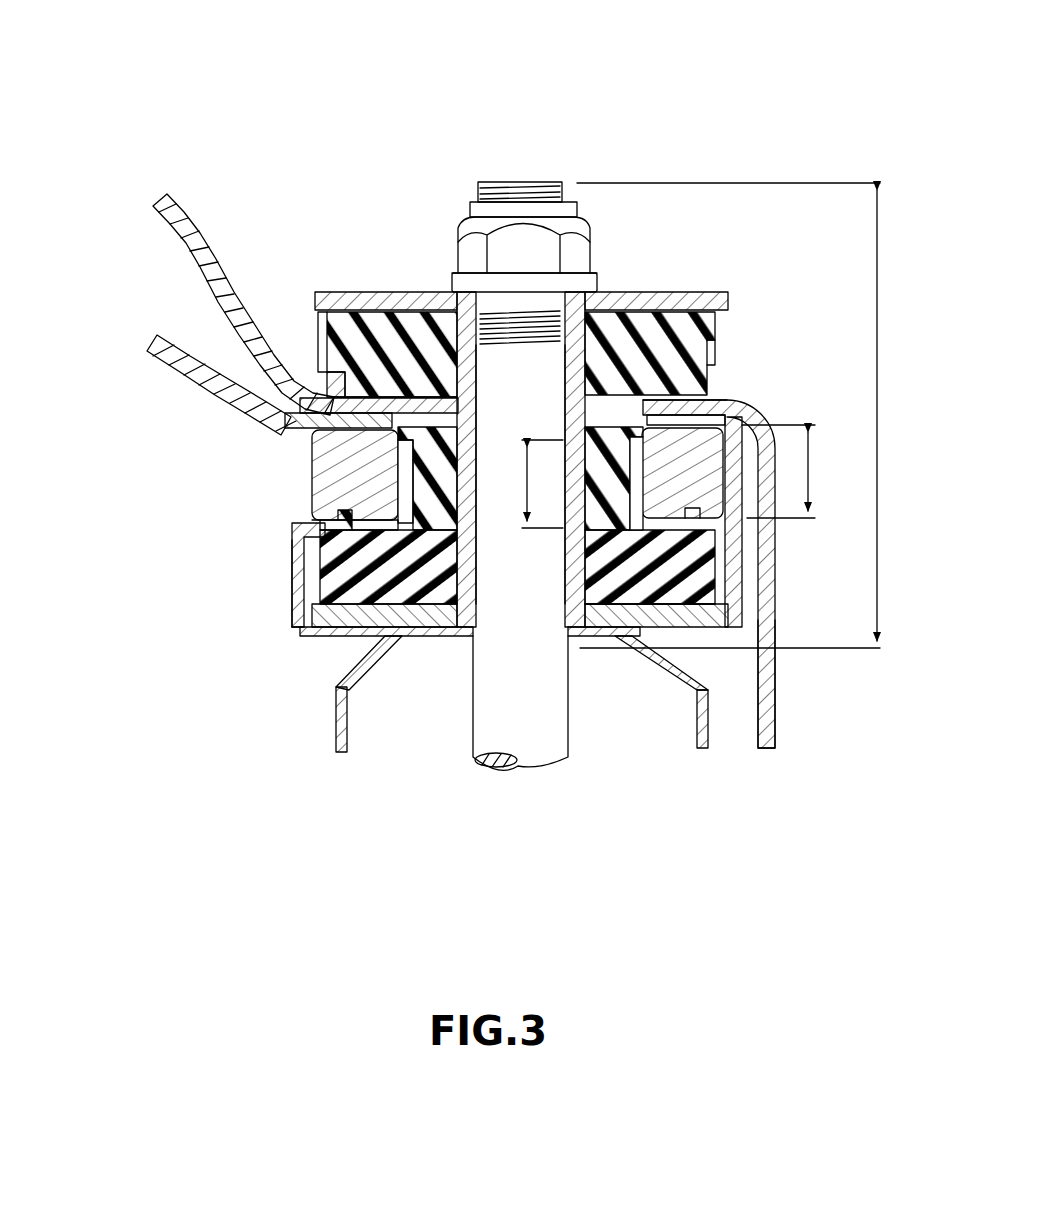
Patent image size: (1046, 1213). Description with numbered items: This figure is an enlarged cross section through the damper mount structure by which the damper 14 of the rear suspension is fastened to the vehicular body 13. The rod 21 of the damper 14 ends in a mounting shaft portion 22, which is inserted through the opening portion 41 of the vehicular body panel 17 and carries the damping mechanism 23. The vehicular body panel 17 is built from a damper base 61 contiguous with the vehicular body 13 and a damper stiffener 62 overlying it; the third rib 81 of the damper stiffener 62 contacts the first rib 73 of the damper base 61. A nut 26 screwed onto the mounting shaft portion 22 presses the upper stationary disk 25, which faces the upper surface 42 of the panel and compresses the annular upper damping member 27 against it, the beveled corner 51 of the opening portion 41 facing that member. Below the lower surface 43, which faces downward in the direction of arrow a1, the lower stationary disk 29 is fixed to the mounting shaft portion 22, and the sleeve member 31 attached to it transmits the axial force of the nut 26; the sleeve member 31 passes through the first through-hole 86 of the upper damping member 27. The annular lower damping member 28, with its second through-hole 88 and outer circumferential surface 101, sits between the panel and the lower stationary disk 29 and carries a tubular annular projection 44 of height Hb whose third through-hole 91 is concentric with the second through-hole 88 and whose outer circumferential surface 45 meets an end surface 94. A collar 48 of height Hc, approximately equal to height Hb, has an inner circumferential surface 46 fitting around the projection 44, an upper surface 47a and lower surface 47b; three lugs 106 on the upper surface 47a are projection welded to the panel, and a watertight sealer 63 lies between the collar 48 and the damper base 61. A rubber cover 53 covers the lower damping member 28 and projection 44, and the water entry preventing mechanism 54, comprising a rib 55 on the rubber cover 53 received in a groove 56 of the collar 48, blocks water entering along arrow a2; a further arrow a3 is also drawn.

The vehicular body 13 is at (191, 100).
The damper 14 is at (295, 736).
The vehicular body panel 17 is at (128, 248).
The rod 21 is at (470, 750).
The mounting shaft portion 22 is at (878, 283).
The damping mechanism 23 is at (400, 213).
The upper stationary disk 25 is at (355, 292).
The nut 26 is at (458, 250).
The upper damping member 27 is at (327, 337).
The lower damping member 28 is at (340, 558).
The lower stationary disk 29 is at (340, 630).
The sleeve member 31 is at (400, 640).
The opening portion 41 is at (432, 395).
The upper surface 42 is at (322, 330).
The lower surface 43 is at (300, 418).
The annular projection 44 is at (330, 508).
The outer circumferential surface 45 is at (330, 470).
The inner circumferential surface 46 is at (598, 605).
The upper surface 47a is at (700, 425).
The lower surface 47b is at (630, 600).
The collar 48 is at (310, 462).
The beveled corner 51 is at (390, 397).
The rubber cover 53 is at (293, 590).
The water entry preventing mechanism 54 is at (330, 520).
The rib 55 is at (728, 470).
The groove 56 is at (655, 640).
The damper base 61 is at (155, 345).
The damper stiffener 62 is at (207, 235).
The watertight sealer 63 is at (737, 400).
The first rib 73 is at (746, 565).
The third rib 81 is at (777, 627).
The first through-hole 86 is at (575, 352).
The second through-hole 88 is at (565, 591).
The third through-hole 91 is at (575, 518).
The end surface 94 is at (598, 395).
The outer circumferential surface 101 is at (294, 608).
The lugs 106 is at (706, 370).
The height of projection Hb is at (525, 484).
The height of collar Hc is at (795, 471).
The arrow a1 is at (243, 913).
The arrow a2 is at (270, 895).
The direction a3 is at (495, 112).